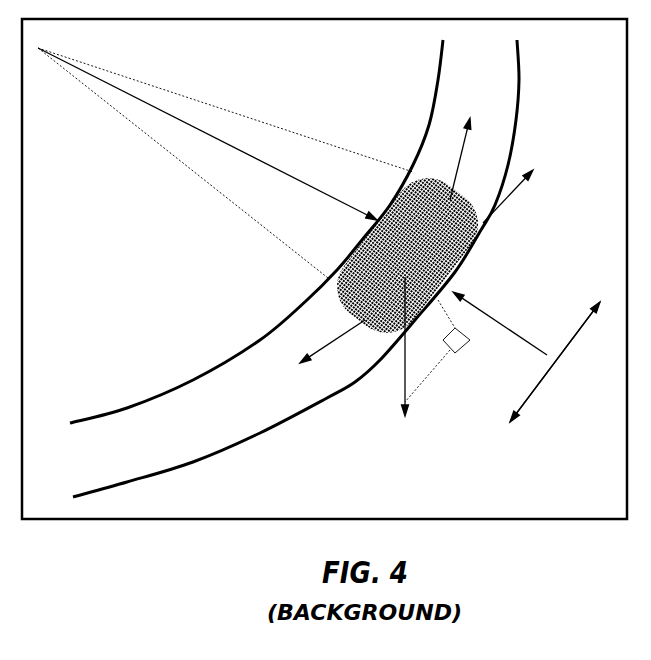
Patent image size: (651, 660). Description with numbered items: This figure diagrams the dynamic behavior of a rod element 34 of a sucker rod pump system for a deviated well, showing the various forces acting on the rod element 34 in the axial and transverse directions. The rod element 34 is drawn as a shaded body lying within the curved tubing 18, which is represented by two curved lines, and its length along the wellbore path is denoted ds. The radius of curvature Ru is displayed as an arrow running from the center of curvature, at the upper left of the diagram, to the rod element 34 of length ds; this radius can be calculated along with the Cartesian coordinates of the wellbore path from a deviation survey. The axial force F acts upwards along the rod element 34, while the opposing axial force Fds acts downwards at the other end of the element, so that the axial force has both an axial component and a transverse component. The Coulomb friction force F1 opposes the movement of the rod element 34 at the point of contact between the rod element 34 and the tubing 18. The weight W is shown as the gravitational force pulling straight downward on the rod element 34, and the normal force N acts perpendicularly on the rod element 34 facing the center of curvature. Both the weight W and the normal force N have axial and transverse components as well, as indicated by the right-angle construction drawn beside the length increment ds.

The tubing 18 is at (440, 80).
The rod element 34 is at (458, 258).
The radius of curvature Ru is at (225, 163).
The axial force F is at (465, 159).
The Coulomb friction force F1 is at (508, 204).
The normal force N is at (500, 323).
The weight W is at (390, 349).
The axial force at the other end of the rod element Fds is at (302, 359).
The length of the rod element ds is at (555, 362).